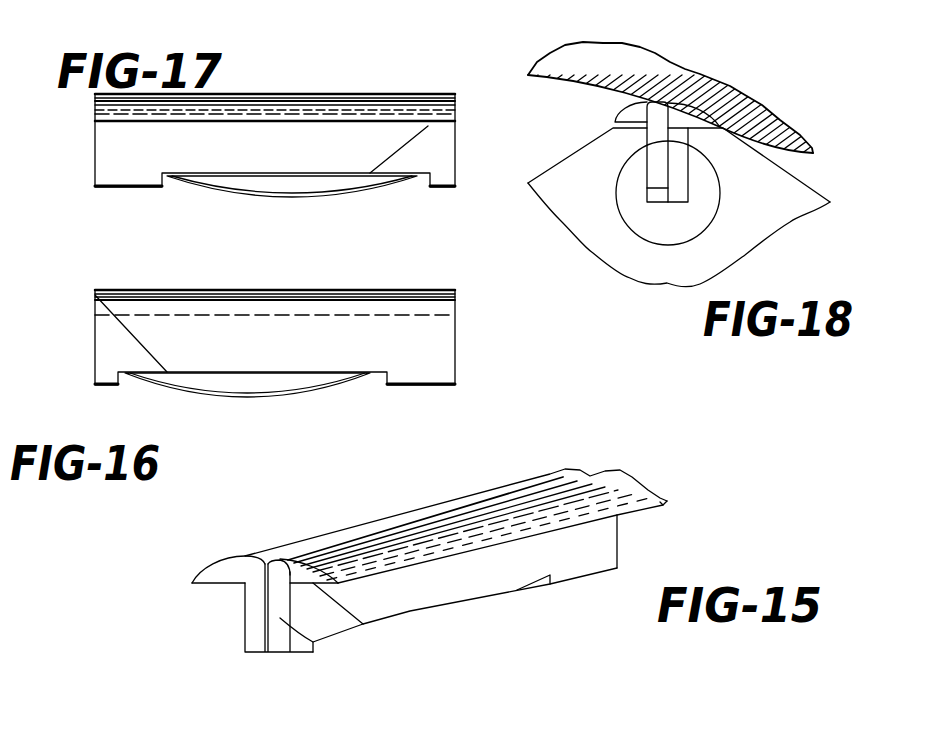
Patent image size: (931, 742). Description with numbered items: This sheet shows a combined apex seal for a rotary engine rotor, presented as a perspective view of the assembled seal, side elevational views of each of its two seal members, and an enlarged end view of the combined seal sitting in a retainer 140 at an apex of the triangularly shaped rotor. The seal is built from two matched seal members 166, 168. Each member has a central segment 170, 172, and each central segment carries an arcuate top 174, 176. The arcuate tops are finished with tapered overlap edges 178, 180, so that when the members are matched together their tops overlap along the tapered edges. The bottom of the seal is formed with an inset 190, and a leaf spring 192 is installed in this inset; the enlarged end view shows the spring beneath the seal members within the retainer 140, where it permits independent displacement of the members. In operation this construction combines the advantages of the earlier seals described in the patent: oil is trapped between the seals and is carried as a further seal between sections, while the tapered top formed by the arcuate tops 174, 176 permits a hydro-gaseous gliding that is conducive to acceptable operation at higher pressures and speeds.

In FIG. 18, the retainer 140 is at (686, 234).
In FIG. 18, the seal member 166 is at (696, 173).
In FIG. 15, the seal member 166 is at (626, 537).
In FIG. 18, the seal member 168 is at (638, 165).
In FIG. 15, the seal member 168 is at (236, 622).
In FIG. 15, the central segment 170 is at (245, 597).
In FIG. 15, the central segment 172 is at (313, 652).
In FIG. 15, the arcuate top 174 is at (295, 541).
In FIG. 15, the arcuate top 176 is at (633, 477).
In FIG. 15, the tapered overlap edge 178 is at (667, 503).
In FIG. 15, the tapered overlap edge 180 is at (192, 581).
In FIG. 17, the inset 190 is at (228, 178).
In FIG. 16, the inset 190 is at (254, 374).
In FIG. 15, the inset 190 is at (433, 608).
In FIG. 17, the leaf spring 192 is at (280, 194).
In FIG. 16, the leaf spring 192 is at (204, 393).